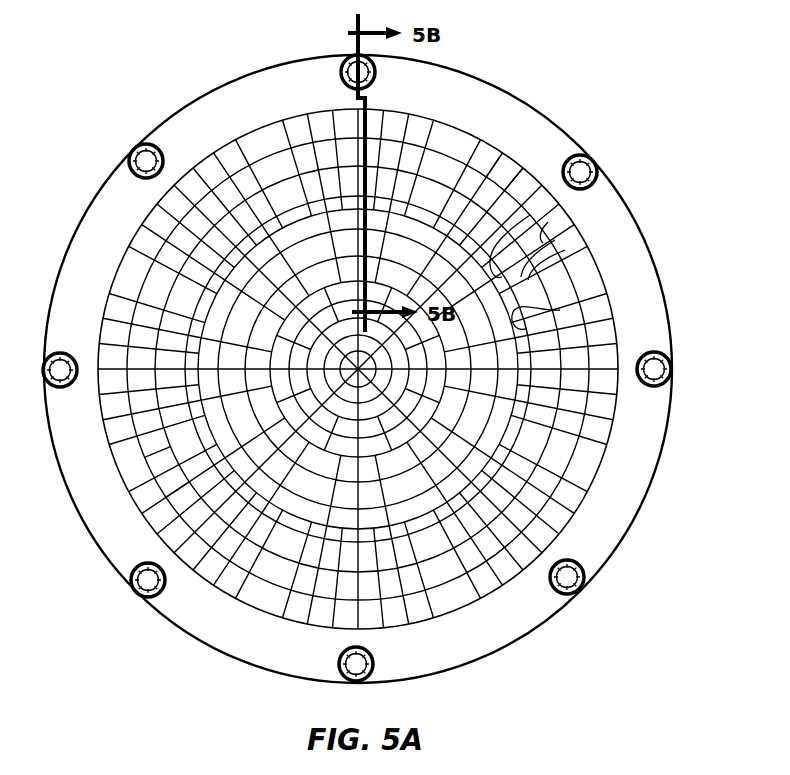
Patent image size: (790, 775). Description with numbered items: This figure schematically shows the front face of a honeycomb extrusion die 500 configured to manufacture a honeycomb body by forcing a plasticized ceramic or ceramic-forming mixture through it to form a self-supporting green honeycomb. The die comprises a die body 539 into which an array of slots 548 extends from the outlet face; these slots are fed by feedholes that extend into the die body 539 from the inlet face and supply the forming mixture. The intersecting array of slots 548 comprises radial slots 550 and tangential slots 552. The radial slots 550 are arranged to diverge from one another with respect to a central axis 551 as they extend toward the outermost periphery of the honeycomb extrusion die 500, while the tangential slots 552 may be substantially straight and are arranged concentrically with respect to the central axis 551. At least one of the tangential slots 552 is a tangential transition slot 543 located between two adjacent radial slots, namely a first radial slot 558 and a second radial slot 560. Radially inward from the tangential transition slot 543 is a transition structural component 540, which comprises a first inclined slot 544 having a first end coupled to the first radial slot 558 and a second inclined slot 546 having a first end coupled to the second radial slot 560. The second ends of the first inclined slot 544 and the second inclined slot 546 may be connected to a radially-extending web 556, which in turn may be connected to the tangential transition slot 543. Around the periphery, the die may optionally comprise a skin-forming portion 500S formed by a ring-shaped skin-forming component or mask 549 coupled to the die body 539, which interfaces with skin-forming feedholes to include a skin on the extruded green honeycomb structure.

The honeycomb extrusion die 500 is at (384, 349).
The skin-forming component or mask 549 is at (83, 213).
The array of slots 548 is at (405, 168).
The radial slots 550 is at (513, 183).
The first inclined slot 544 is at (530, 215).
The first radial slot 558 is at (548, 222).
The tangential transition slot 543 is at (555, 240).
The radially-extending web 556 is at (565, 250).
The transition structural component 540 is at (560, 275).
The second radial slot 560 is at (562, 288).
The second inclined slot 546 is at (560, 310).
The central axis 551 is at (360, 369).
The skin-forming portion 500S is at (632, 417).
The die body 539 is at (585, 452).
The tangential slots 552 is at (185, 478).